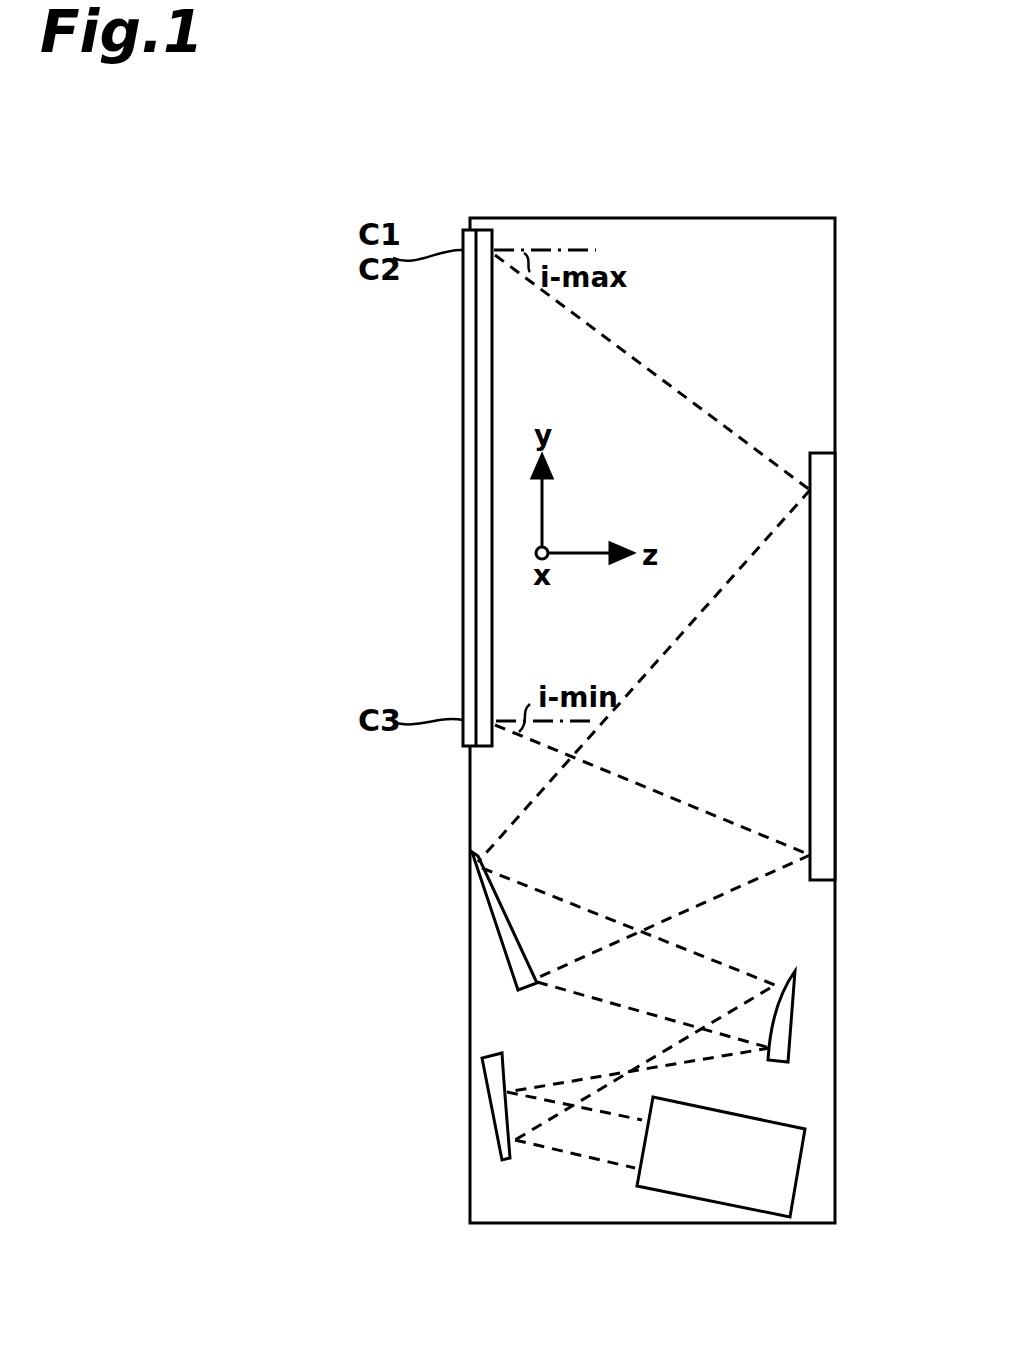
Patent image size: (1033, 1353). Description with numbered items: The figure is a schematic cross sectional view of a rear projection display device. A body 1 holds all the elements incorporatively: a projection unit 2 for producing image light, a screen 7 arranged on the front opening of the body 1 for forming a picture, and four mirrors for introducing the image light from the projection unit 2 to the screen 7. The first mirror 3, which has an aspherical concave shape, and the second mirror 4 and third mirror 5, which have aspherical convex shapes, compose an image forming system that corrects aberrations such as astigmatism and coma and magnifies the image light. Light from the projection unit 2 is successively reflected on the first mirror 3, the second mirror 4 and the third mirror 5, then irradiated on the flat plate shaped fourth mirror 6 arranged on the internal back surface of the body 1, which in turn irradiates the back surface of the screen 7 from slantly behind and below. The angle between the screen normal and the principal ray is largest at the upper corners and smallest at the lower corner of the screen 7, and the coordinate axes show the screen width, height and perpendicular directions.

The body 1 is at (836, 350).
The projection unit 2 is at (782, 1160).
The first mirror 3 is at (492, 1111).
The second mirror 4 is at (786, 1022).
The third mirror 5 is at (505, 933).
The fourth mirror 6 is at (812, 642).
The screen 7 is at (470, 478).